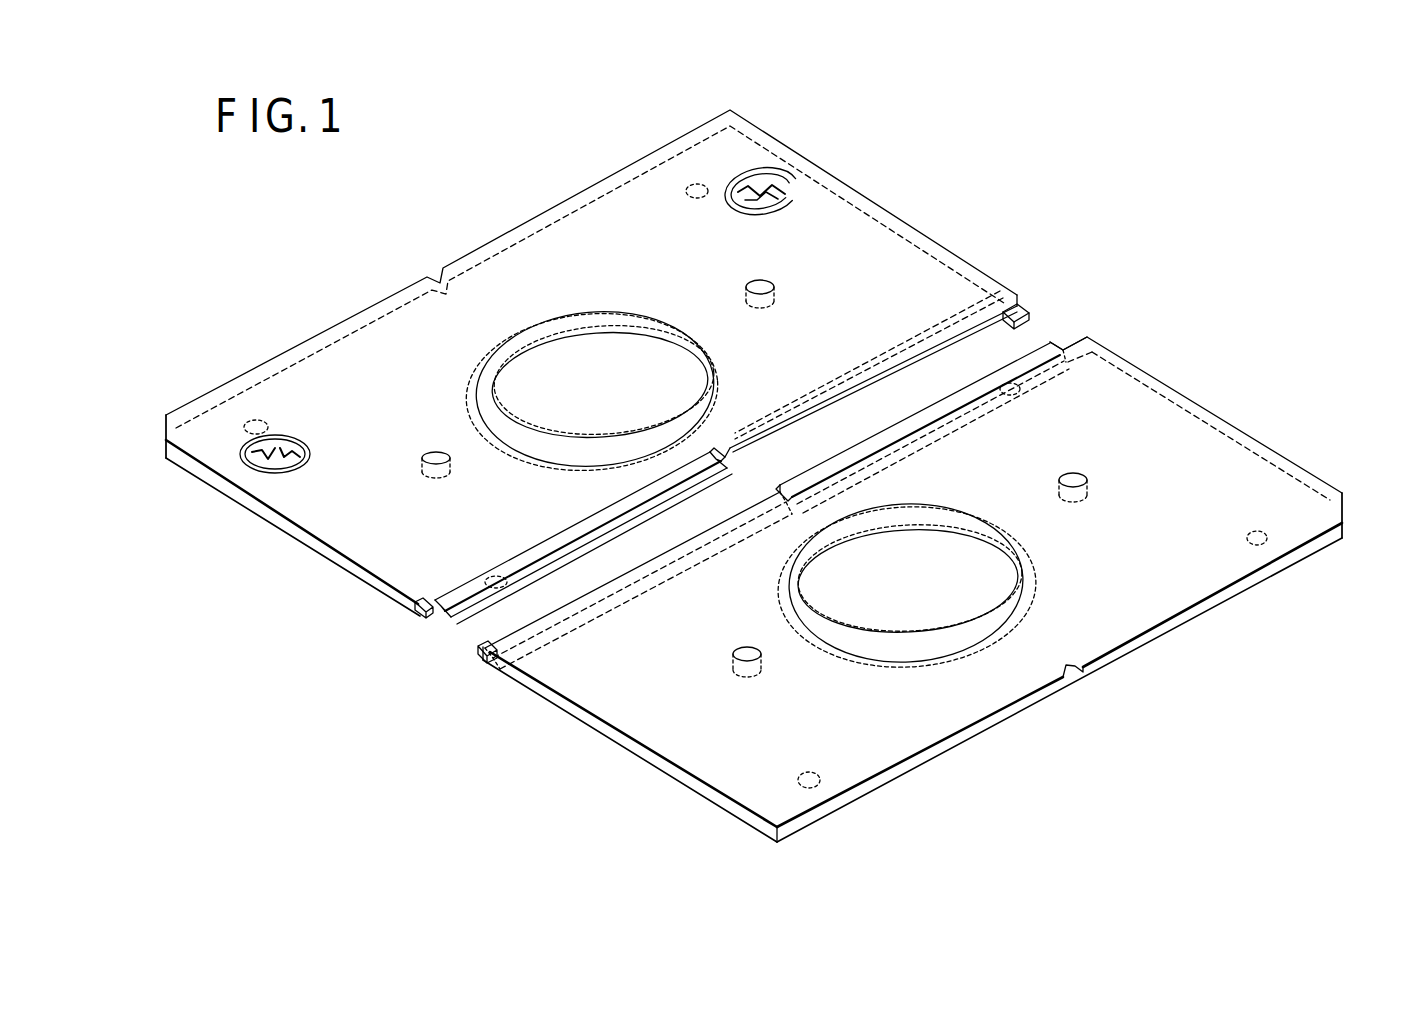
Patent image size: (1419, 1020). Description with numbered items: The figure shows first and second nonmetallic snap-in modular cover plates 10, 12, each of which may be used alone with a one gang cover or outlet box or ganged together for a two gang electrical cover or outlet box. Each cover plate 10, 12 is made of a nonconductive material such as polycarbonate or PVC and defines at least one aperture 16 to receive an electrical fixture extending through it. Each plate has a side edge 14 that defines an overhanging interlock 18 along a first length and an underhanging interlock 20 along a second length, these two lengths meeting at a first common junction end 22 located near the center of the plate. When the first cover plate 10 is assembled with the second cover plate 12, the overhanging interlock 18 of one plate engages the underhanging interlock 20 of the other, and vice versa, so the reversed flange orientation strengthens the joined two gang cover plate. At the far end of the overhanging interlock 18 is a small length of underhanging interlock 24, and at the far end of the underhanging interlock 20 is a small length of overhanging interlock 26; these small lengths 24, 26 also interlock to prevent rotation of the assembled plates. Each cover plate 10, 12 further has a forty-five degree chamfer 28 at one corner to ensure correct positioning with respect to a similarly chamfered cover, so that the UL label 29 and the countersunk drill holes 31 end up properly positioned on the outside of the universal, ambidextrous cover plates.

The first cover plate 10 is at (665, 273).
The second cover plate 12 is at (1150, 543).
The side edge 14 is at (804, 432).
The aperture 16 is at (610, 399).
The overhanging interlock 18 is at (876, 381).
The underhanging interlock 20 is at (652, 520).
The first common junction end 22 is at (738, 459).
The small length of underhanging interlock 24 is at (1026, 312).
The small length of overhanging interlock 26 is at (422, 614).
The 45° chamfer 28 is at (165, 437).
The UL label 29 is at (302, 441).
The countersunk drill holes 31 is at (695, 184).